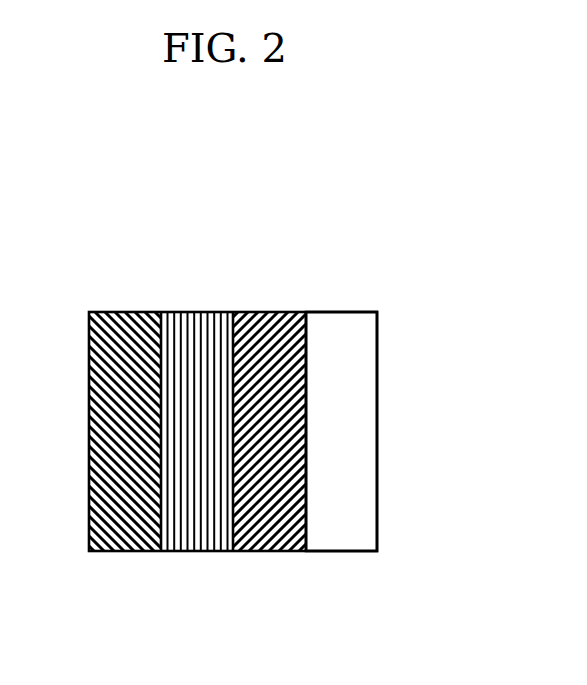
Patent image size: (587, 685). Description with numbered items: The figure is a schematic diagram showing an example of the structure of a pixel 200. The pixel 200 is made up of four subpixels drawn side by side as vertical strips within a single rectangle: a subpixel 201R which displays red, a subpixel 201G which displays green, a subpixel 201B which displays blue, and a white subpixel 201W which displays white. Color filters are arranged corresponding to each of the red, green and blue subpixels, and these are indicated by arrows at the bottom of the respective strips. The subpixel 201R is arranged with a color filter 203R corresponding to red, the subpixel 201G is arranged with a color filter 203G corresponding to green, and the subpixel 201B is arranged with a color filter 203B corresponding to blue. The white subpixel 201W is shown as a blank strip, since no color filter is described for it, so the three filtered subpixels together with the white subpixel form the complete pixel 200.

The pixel 200 is at (440, 272).
The subpixel 201R is at (124, 312).
The subpixel 201G is at (195, 312).
The subpixel 201B is at (268, 312).
The white subpixel 201W is at (342, 312).
The color filter 203R is at (122, 548).
The color filter 203G is at (203, 550).
The color filter 203B is at (270, 550).